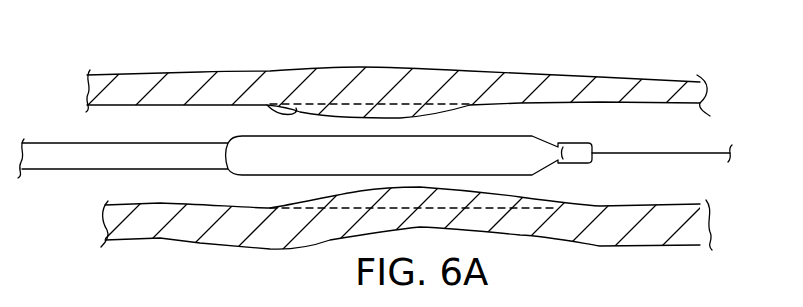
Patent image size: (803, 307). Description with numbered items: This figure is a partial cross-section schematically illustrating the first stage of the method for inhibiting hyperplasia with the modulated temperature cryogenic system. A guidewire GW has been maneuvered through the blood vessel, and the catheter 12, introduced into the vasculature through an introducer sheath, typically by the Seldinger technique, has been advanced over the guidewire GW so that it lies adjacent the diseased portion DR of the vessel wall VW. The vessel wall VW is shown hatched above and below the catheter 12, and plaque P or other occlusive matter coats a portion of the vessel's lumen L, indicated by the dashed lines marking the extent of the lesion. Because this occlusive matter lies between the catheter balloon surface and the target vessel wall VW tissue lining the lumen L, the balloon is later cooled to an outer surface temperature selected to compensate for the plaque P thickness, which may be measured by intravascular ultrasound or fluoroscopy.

The catheter 12 is at (253, 136).
The plaque P is at (270, 107).
The diseased portion DR is at (490, 60).
The vessel wall VW is at (527, 80).
The lumen L is at (458, 105).
The guidewire GW is at (708, 153).